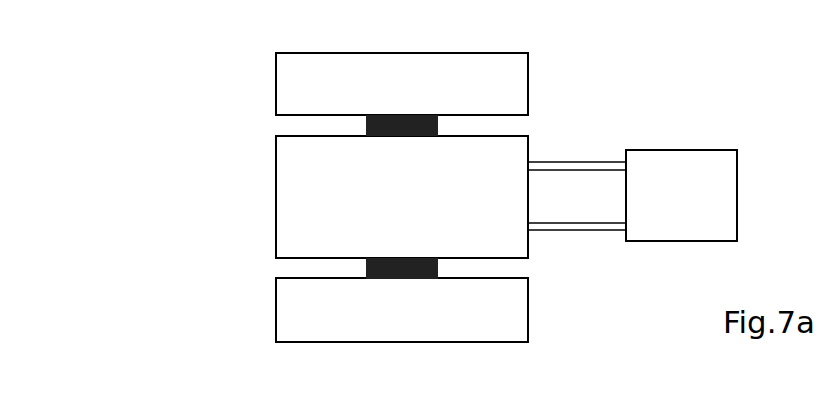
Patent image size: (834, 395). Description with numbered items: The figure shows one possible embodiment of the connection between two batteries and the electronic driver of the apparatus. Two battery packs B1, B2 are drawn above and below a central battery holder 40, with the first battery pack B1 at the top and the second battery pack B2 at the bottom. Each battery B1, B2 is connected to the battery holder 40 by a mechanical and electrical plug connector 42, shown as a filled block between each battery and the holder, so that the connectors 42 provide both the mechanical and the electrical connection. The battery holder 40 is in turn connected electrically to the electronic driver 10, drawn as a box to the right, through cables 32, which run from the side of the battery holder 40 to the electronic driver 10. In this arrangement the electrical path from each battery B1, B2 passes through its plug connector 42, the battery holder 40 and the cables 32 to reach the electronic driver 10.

The electronic driver 10 is at (681, 195).
The cables 32 is at (543, 226).
The battery holder 40 is at (402, 197).
The mechanical and electrical plug connectors 42 is at (366, 127).
The battery pack B1 is at (402, 84).
The battery pack B2 is at (402, 310).